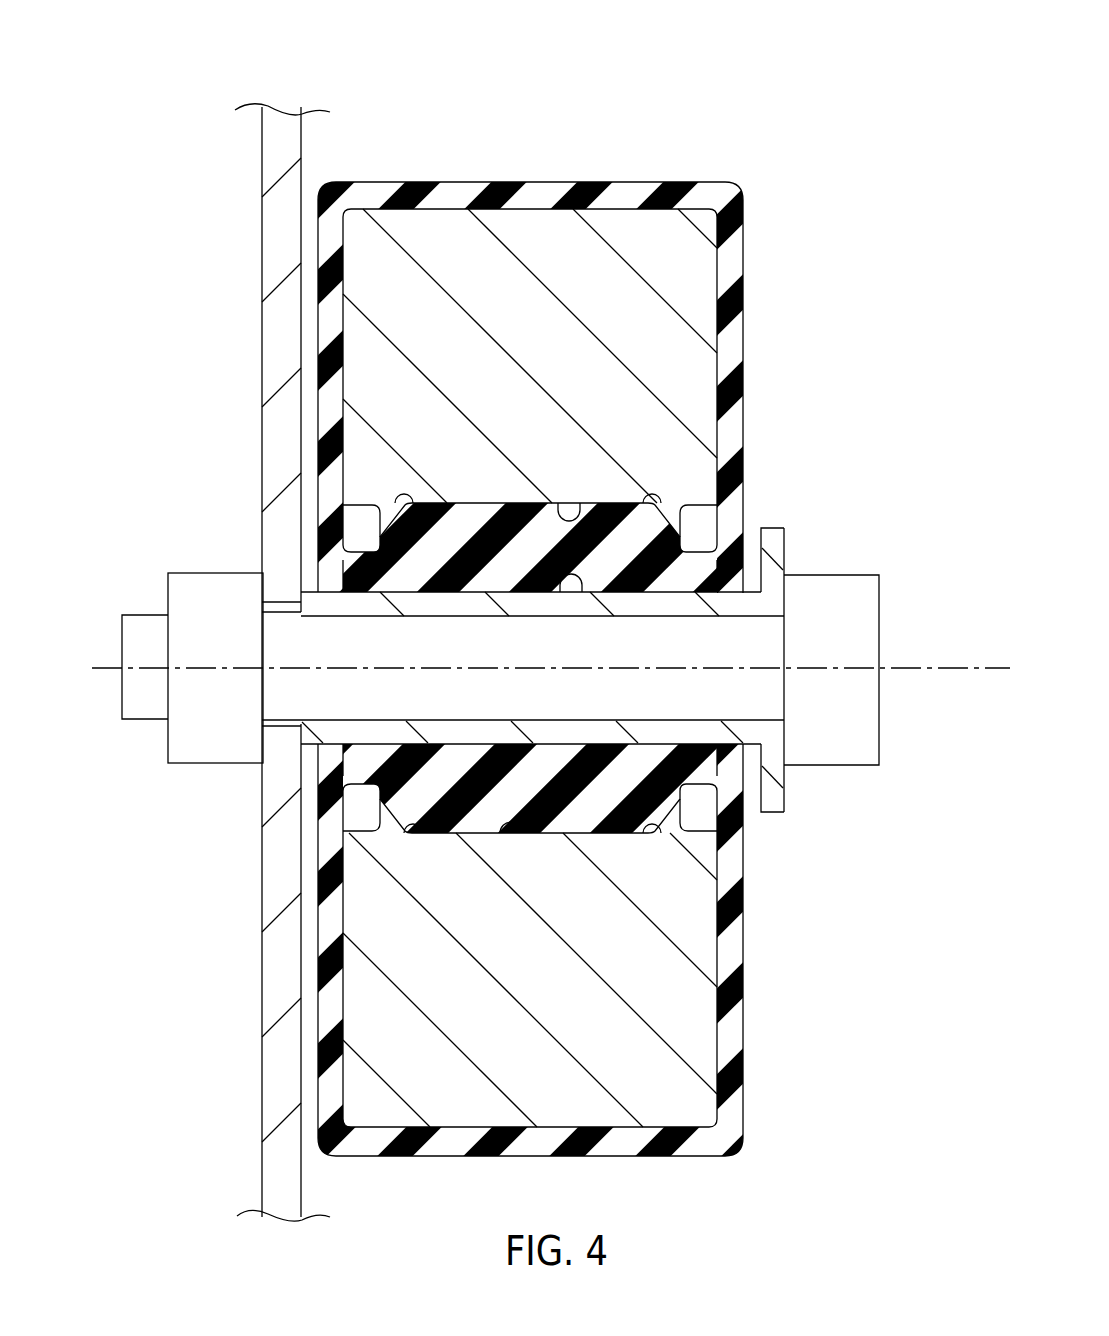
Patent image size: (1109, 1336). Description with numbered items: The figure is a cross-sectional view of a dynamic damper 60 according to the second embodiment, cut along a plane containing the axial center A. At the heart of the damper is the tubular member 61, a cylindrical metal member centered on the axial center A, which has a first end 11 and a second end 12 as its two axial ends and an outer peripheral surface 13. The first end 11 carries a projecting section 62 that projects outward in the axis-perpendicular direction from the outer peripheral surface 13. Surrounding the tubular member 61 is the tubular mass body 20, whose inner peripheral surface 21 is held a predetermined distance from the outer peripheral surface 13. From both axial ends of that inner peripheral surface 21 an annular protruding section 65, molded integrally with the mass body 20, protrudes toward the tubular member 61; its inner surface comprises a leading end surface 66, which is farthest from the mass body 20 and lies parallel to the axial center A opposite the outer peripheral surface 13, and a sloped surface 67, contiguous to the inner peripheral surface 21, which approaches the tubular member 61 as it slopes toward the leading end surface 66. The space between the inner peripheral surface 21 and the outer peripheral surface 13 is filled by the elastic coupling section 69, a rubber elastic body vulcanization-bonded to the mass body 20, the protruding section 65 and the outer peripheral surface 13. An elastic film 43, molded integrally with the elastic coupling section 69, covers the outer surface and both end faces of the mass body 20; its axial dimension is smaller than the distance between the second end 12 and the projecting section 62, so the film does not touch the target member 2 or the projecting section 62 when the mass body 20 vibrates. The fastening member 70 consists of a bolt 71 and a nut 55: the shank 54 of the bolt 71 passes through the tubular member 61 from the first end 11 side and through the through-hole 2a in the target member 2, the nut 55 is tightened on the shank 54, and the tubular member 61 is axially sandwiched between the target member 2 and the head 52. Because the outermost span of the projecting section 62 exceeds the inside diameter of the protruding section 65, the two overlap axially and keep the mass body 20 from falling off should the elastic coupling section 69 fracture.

The target member 2 is at (262, 228).
The through-hole 2a is at (275, 722).
The first end 11 is at (784, 603).
The second end 12 is at (262, 603).
The outer peripheral surface 13 is at (575, 587).
The mass body 20 is at (703, 272).
The inner peripheral surface 21 is at (561, 500).
The elastic film 43 is at (466, 192).
The head 52 is at (866, 640).
The shank 54 is at (145, 650).
The nut 55 is at (214, 742).
The dynamic damper 60 is at (838, 78).
The tubular member 61 is at (462, 605).
The projecting section 62 is at (773, 538).
The protruding section 65 is at (360, 540).
The leading end surface 66 is at (350, 556).
The sloped surface 67 is at (415, 498).
The elastic coupling section 69 is at (490, 745).
The fastening member 70 is at (160, 526).
The bolt 71 is at (860, 548).
The axial center A is at (232, 668).